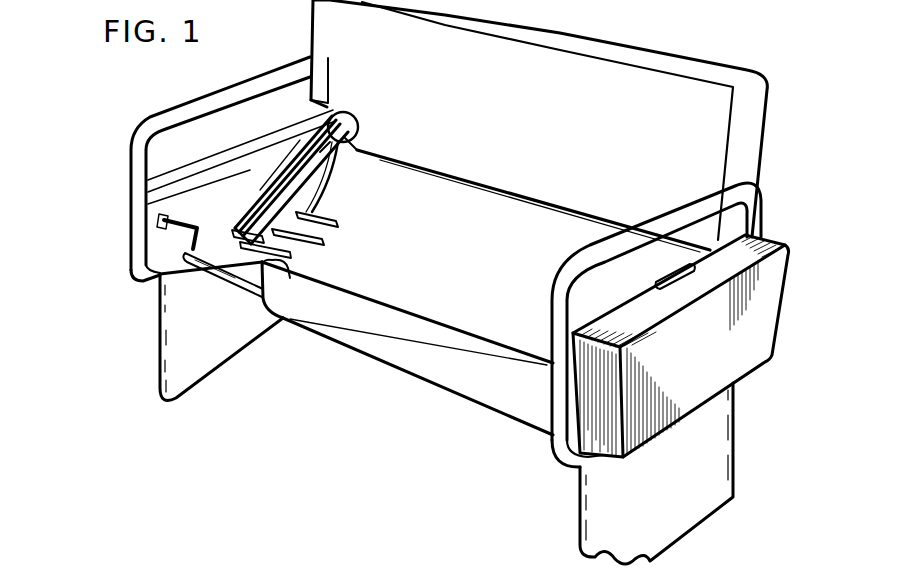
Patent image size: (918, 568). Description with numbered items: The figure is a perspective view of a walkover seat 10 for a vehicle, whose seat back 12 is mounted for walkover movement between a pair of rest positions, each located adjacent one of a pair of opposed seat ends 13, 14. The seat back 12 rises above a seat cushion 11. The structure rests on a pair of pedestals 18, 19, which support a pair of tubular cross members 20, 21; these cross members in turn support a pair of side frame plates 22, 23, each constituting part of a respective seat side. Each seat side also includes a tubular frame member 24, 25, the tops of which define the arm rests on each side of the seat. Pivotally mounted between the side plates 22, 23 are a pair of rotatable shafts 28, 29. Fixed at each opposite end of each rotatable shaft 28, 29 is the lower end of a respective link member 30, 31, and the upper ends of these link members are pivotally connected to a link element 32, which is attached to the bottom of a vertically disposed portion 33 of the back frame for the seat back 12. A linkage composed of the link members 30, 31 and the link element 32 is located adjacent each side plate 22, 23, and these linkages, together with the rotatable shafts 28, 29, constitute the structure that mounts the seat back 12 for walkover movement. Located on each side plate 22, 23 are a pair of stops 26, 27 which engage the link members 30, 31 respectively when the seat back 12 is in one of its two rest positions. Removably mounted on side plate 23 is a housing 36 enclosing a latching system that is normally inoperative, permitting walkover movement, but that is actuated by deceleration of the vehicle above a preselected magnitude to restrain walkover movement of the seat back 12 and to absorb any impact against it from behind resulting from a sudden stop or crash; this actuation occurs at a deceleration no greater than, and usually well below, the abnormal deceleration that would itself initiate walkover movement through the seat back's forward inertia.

The walkover seat 10 is at (142, 89).
The seat cushion 11 is at (477, 308).
The seat back 12 is at (536, 79).
The seat end 13 is at (520, 197).
The seat end 14 is at (349, 346).
The pedestal 18 is at (160, 355).
The pedestal 19 is at (598, 513).
The tubular cross member 20 is at (227, 283).
The tubular cross member 21 is at (352, 215).
The side frame plate 22 is at (218, 158).
The side frame plate 23 is at (682, 280).
The tubular frame member 24 is at (134, 166).
The tubular frame member 25 is at (763, 210).
The stop 26 is at (184, 222).
The stop 27 is at (335, 180).
The rotatable shaft 28 is at (274, 270).
The rotatable shaft 29 is at (320, 237).
The link member 30 is at (275, 130).
The link member 31 is at (353, 140).
The link element 32 is at (345, 113).
The vertically disposed portion 33 is at (329, 102).
The housing 36 is at (681, 372).